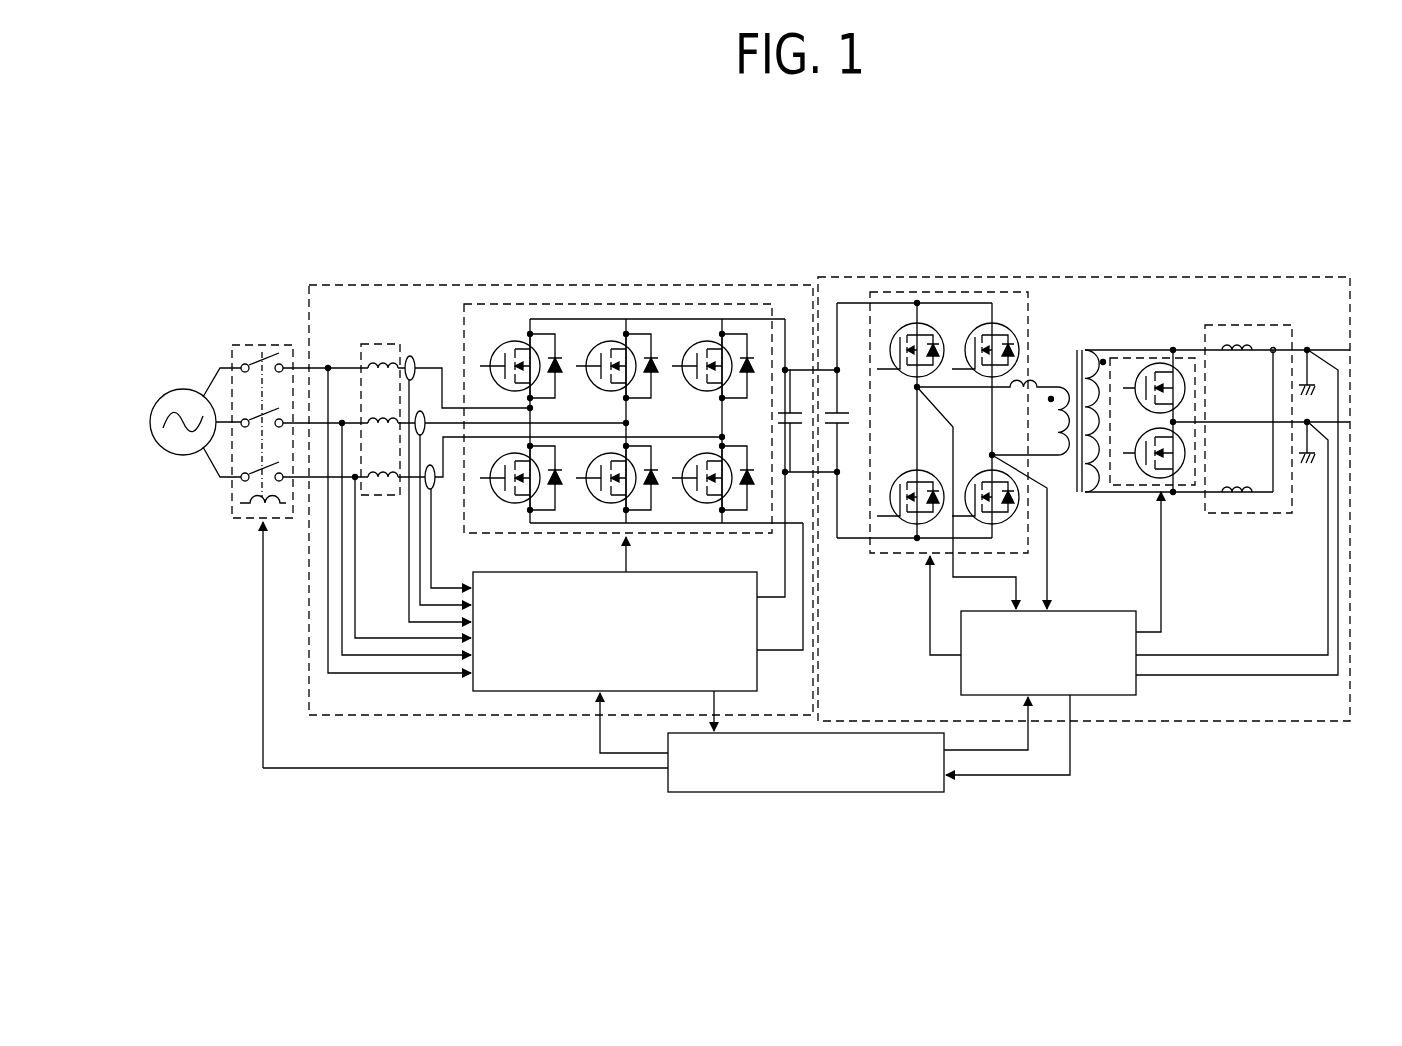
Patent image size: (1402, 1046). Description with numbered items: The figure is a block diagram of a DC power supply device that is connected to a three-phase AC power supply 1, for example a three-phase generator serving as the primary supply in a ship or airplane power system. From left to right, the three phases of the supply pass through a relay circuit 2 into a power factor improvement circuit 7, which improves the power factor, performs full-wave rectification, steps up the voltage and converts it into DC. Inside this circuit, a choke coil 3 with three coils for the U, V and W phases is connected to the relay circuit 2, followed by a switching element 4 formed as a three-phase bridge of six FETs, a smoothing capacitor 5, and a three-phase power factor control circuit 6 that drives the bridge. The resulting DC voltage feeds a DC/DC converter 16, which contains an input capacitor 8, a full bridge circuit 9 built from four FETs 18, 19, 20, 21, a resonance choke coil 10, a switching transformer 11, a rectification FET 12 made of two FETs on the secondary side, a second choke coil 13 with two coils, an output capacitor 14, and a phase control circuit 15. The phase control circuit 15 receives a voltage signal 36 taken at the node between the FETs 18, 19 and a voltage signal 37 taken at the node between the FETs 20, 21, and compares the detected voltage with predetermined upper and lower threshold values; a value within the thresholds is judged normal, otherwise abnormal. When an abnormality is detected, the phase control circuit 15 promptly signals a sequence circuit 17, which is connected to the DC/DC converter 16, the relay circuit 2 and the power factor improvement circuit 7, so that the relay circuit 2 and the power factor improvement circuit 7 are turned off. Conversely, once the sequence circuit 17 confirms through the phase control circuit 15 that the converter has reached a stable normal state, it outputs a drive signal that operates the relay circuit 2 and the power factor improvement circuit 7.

The three-phase AC power supply 1 is at (182, 389).
The relay circuit 2 is at (264, 345).
The choke coil 3 is at (385, 344).
The switching element 4 is at (535, 303).
The smoothing capacitor 5 is at (790, 400).
The three-phase power factor control circuit 6 is at (513, 691).
The power factor improvement circuit 7 is at (407, 715).
The input capacitor 8 is at (838, 405).
The full bridge circuit 9 is at (975, 401).
The resonance choke coil 10 is at (1040, 380).
The switching transformer 11 is at (1090, 348).
The rectification FET 12 is at (1185, 330).
The choke coil 13 is at (1243, 513).
The output capacitor 14 is at (1308, 383).
The phase control circuit 15 is at (1107, 695).
The DC/DC converter 16 is at (1243, 721).
The sequence circuit 17 is at (890, 792).
The FET 18 is at (925, 323).
The FET 19 is at (903, 524).
The FET 20 is at (1000, 323).
The FET 21 is at (1012, 514).
The voltage signal 36 is at (997, 590).
The voltage signal 37 is at (1052, 576).